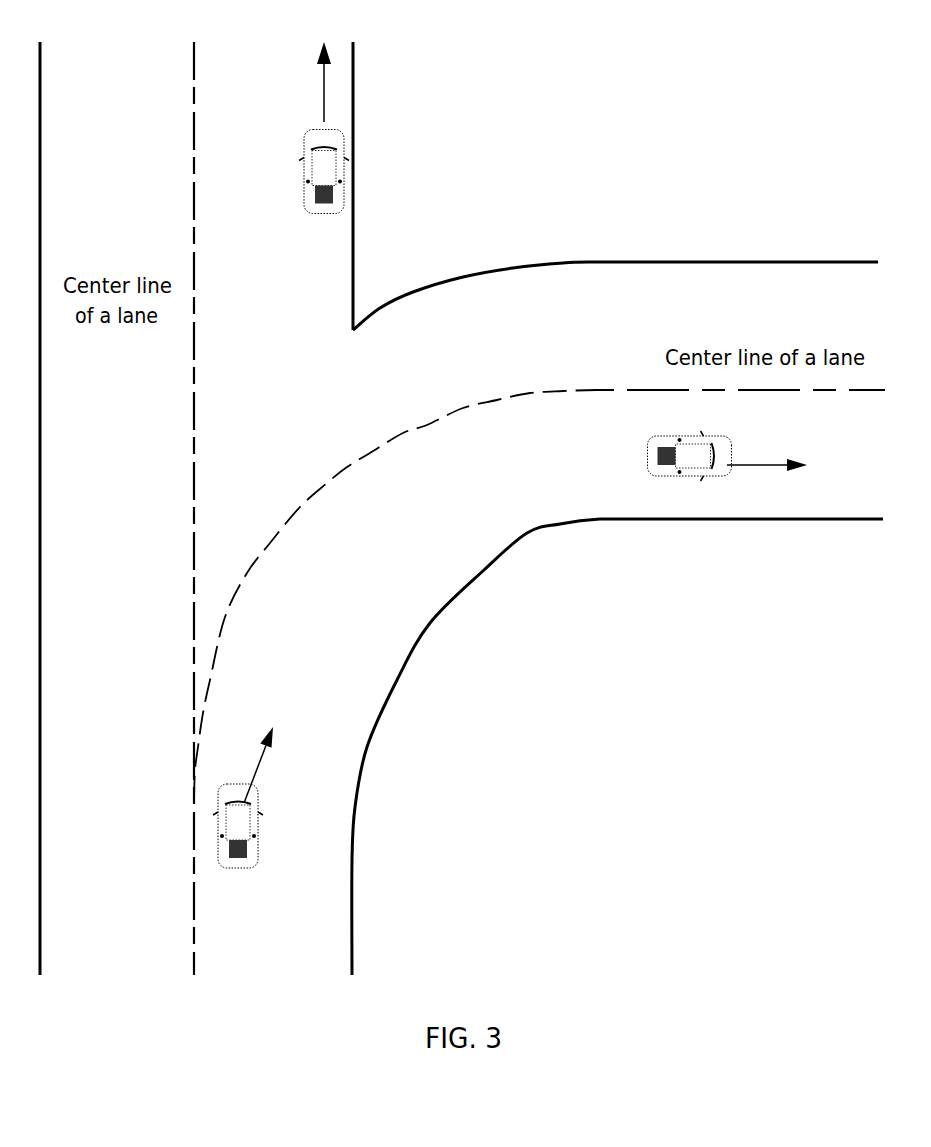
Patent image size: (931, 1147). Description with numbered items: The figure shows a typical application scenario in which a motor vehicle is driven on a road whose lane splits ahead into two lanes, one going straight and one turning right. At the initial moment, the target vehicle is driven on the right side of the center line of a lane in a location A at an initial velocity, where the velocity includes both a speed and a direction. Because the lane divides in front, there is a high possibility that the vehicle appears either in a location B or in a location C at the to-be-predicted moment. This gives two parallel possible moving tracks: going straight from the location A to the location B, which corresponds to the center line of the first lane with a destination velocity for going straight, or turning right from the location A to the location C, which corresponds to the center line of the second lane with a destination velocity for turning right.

The location A is at (266, 785).
The location B is at (312, 108).
The location C is at (747, 471).